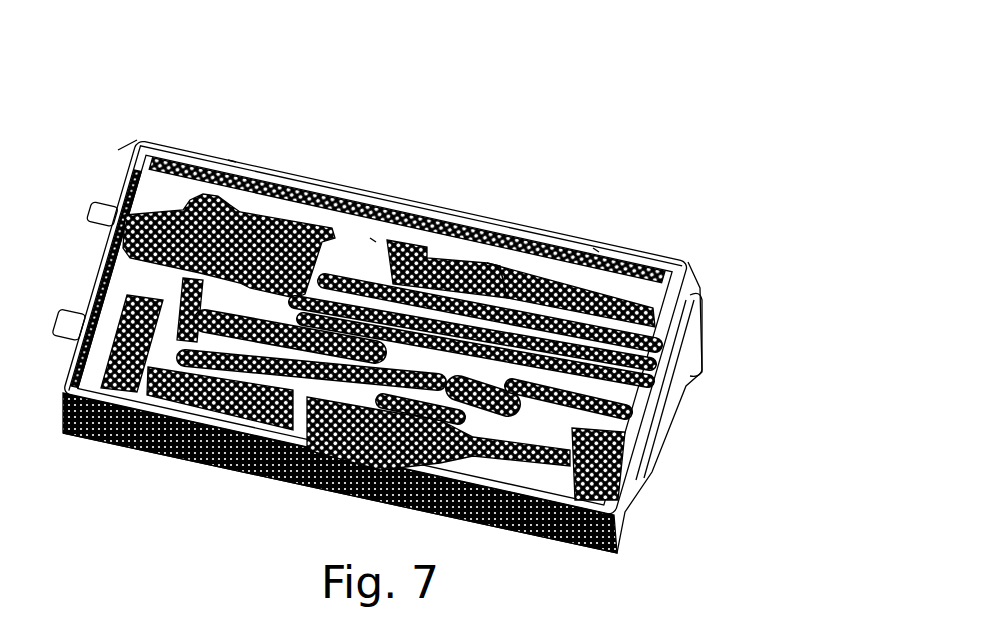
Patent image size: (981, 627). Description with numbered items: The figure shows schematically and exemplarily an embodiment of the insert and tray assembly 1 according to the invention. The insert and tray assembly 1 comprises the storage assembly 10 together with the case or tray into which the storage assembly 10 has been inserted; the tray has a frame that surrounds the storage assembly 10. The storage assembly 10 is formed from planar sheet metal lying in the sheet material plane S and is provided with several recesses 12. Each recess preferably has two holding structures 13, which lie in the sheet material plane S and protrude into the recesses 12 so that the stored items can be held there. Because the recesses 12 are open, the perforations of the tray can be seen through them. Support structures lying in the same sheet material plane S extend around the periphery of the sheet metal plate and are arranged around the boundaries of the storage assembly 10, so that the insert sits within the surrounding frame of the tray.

The insert and tray assembly 1 is at (682, 118).
The storage assembly 10 is at (722, 170).
The sheet material plane S is at (290, 215).
The recesses 12 is at (445, 263).
The holding structures 13 is at (490, 270).